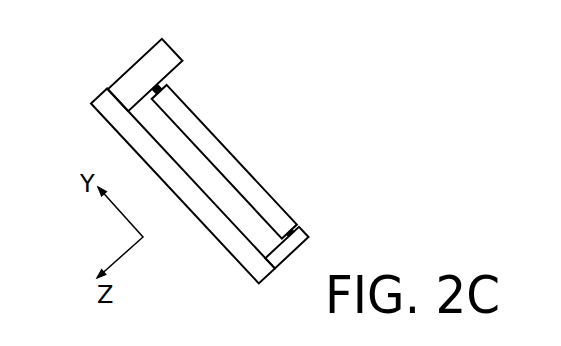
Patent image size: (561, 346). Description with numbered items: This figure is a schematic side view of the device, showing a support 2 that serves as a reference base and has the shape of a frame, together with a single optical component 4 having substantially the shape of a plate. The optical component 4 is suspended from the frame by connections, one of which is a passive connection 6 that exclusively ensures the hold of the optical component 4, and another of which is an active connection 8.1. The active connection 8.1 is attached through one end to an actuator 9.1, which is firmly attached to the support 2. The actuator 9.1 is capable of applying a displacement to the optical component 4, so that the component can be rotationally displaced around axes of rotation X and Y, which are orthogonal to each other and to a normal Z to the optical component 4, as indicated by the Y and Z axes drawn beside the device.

The support 2 is at (121, 135).
The optical component 4 is at (250, 176).
The passive connection 6 is at (296, 231).
The active connection 8.1 is at (168, 82).
The actuator 9.1 is at (142, 75).